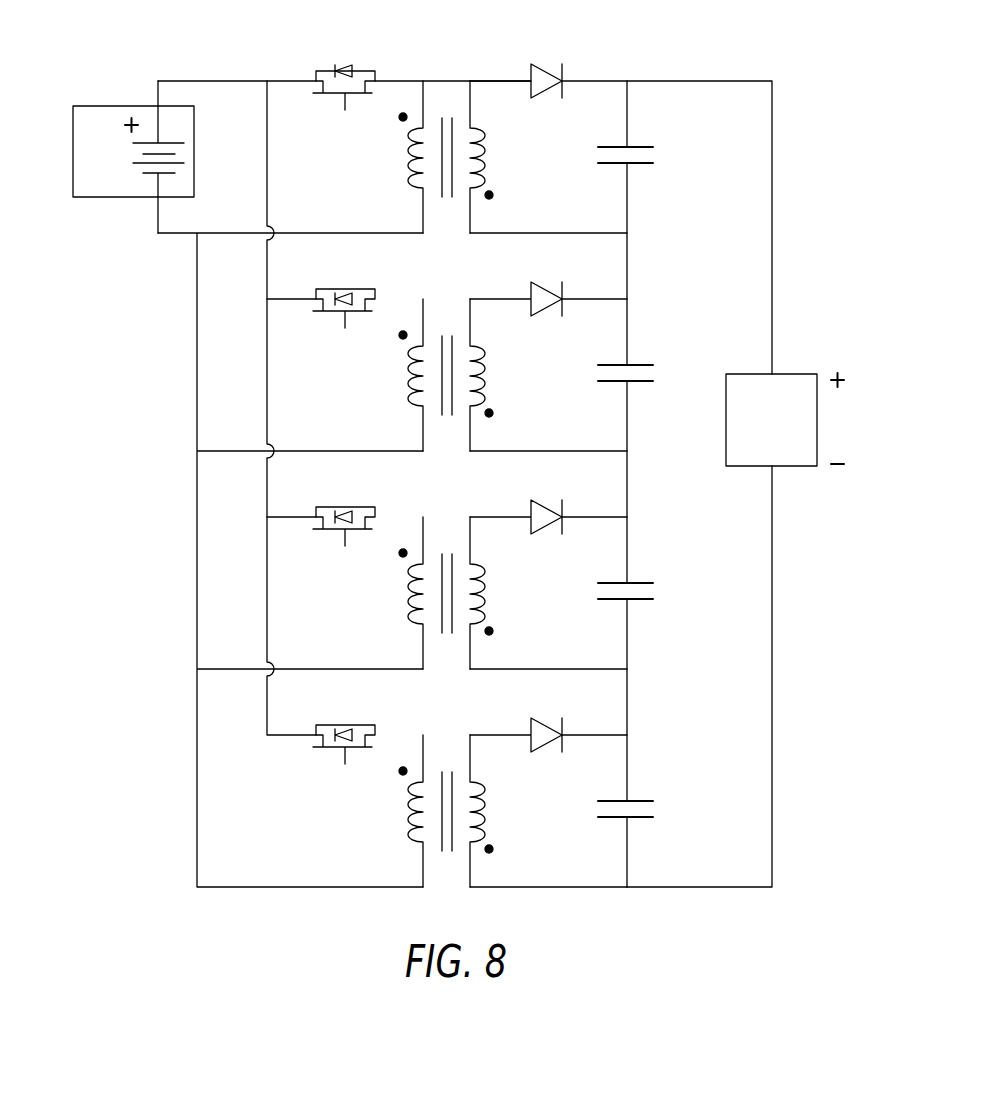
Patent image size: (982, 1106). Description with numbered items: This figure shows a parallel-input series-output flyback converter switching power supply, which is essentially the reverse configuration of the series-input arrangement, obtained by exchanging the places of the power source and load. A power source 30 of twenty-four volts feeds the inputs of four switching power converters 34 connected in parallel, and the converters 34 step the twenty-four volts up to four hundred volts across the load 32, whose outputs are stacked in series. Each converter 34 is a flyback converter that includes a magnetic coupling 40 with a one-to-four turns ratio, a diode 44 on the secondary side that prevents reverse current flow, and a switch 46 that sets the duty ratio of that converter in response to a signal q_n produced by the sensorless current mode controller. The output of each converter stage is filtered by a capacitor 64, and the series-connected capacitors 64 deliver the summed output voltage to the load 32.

The power source 30 is at (106, 106).
The load 32 is at (797, 374).
The switching power converter 34 is at (519, 135).
The magnetic coupling 40 is at (456, 92).
The diode 44 is at (540, 66).
The switch 46 is at (334, 53).
The capacitor 64 is at (646, 147).